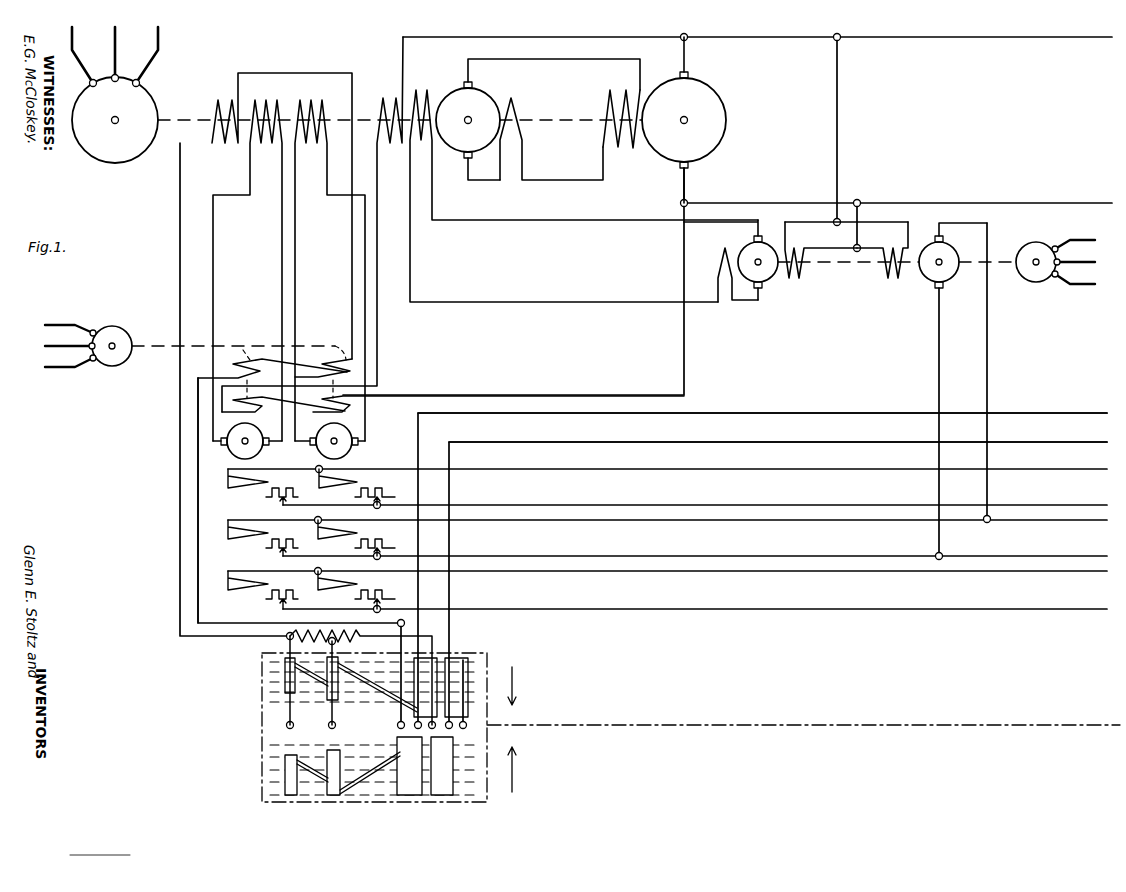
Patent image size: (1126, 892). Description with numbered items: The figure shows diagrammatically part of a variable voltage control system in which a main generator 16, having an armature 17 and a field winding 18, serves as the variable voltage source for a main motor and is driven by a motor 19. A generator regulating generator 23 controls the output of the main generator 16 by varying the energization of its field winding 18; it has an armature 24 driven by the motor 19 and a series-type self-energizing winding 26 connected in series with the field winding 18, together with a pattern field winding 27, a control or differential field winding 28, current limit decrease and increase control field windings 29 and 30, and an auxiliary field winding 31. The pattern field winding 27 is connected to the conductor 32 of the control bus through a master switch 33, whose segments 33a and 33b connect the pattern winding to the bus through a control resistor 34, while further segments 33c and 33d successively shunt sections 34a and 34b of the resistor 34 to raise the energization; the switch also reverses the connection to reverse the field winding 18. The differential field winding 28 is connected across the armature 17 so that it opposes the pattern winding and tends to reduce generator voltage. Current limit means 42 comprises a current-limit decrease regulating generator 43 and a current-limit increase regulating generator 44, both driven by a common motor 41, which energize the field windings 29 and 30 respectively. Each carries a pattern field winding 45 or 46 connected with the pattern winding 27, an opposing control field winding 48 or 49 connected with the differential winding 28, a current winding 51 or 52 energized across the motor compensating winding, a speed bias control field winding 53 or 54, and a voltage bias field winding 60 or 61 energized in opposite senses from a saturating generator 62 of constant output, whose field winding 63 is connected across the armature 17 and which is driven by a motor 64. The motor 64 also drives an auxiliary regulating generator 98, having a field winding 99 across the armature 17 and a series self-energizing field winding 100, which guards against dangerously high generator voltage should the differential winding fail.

The motor 19 is at (101, 158).
The pattern field winding 27 is at (218, 100).
The current limit decrease control field winding 29 is at (277, 100).
The current limit increase control field winding 30 is at (300, 102).
The control or differential field winding 28 is at (394, 146).
The auxiliary field winding 31 is at (418, 103).
The generator regulating generator 23 is at (512, 88).
The armature 24 is at (455, 147).
The series-type self-energizing winding 26 is at (523, 132).
The field winding 18 is at (630, 151).
The main generator 16 is at (752, 94).
The armature 17 is at (707, 153).
The series type self-energizing field winding 100 is at (721, 262).
The auxiliary regulating generator 98 is at (770, 279).
The field winding 99 is at (800, 270).
The field winding 63 is at (884, 270).
The generator 62 is at (906, 300).
The motor 64 is at (1038, 238).
The common motor 41 is at (120, 331).
The pattern field winding 45 is at (272, 363).
The pattern field winding 46 is at (323, 362).
The control field winding 48 is at (262, 420).
The control field winding 49 is at (338, 414).
The current-limit decrease regulating generator 43 is at (231, 455).
The current-limit increase regulating generator 44 is at (352, 453).
The current limit means 42 is at (136, 472).
The current winding 51 is at (258, 484).
The current winding 52 is at (352, 484).
The voltage bias field winding 60 is at (258, 535).
The voltage bias field winding 61 is at (352, 535).
The speed bias control field winding 53 is at (258, 586).
The speed bias control field winding 54 is at (352, 586).
The conductor 32 is at (812, 425).
The control resistor 34 is at (288, 637).
The section 34a is at (352, 681).
The section 34b is at (305, 680).
The master switch 33 is at (556, 702).
The segment 33a is at (468, 660).
The segment 33b is at (437, 660).
The segment 33c is at (340, 700).
The segment 33d is at (285, 688).